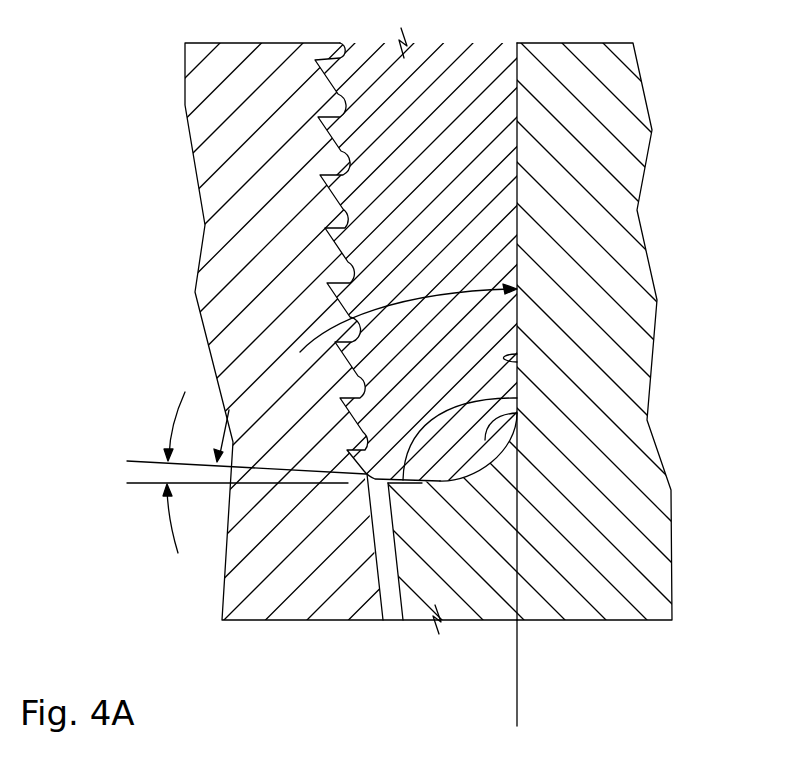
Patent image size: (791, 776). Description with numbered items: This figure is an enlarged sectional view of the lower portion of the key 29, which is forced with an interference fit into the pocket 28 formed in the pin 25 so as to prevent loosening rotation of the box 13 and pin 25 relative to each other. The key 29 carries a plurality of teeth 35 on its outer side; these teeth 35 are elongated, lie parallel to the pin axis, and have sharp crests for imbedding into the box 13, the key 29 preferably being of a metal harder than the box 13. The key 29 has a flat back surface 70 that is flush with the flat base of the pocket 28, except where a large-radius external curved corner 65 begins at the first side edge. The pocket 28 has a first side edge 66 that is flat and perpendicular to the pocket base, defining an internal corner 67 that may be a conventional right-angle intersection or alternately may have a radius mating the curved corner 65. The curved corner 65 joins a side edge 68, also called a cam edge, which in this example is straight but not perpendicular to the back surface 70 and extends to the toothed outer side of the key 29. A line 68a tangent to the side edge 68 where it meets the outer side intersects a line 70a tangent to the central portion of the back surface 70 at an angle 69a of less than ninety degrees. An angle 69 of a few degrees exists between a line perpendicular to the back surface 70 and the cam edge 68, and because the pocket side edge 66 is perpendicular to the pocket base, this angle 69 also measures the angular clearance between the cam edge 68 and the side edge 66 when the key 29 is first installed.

The box 13 is at (187, 176).
The pin 25 is at (612, 316).
The pocket 28 is at (517, 360).
The key 29 is at (478, 228).
The teeth 35 is at (343, 240).
The curved corner 65 is at (515, 428).
The first side edge 66 is at (517, 398).
The internal corner 67 is at (515, 412).
The side edge 68 is at (422, 484).
The line 68a is at (140, 460).
The angle 69 is at (138, 473).
The angle 69a is at (268, 388).
The back surface 70 is at (517, 148).
The line 70a is at (517, 703).